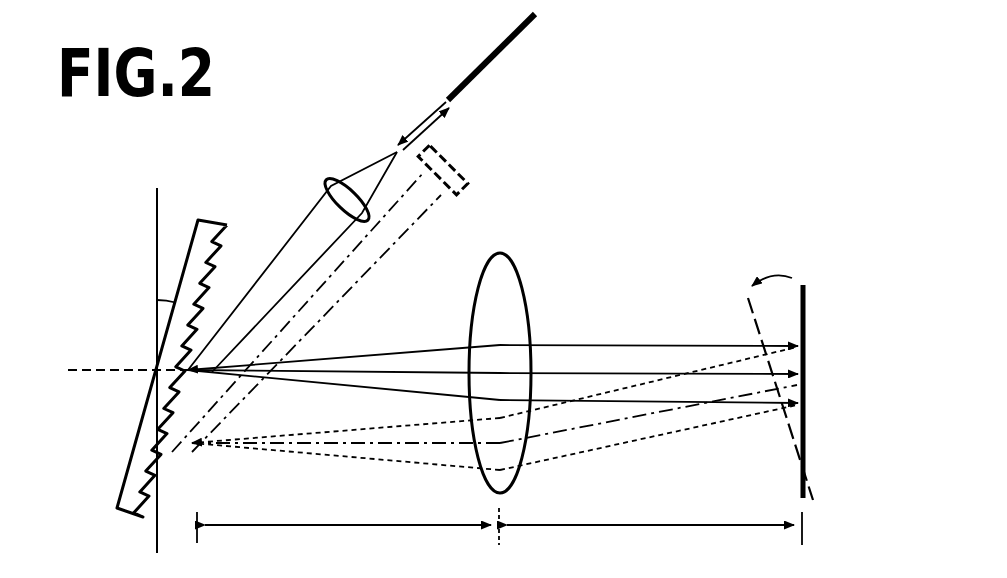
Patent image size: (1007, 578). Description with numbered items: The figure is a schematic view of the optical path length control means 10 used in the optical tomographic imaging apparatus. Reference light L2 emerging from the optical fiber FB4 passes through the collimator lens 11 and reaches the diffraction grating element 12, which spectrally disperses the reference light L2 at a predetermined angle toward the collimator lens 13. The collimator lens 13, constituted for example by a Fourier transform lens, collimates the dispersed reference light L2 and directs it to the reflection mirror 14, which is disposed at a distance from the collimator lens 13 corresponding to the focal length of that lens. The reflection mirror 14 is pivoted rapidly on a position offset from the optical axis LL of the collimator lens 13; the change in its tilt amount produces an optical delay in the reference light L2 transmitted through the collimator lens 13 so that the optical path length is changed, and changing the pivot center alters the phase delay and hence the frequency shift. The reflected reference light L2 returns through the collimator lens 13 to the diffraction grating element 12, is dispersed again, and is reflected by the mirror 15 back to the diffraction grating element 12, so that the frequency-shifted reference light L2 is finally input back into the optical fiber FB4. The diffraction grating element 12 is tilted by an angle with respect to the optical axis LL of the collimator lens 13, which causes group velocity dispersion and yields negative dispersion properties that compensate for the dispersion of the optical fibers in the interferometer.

The optical path length control means 10 is at (615, 133).
The collimator lens 11 is at (334, 178).
The diffraction grating element 12 is at (216, 222).
The collimator lens 13 is at (522, 282).
The reflection mirror 14 is at (757, 320).
The mirror 15 is at (466, 176).
The optical fiber FB4 is at (497, 55).
The reference light L2 is at (424, 118).
The optical axis LL is at (583, 372).